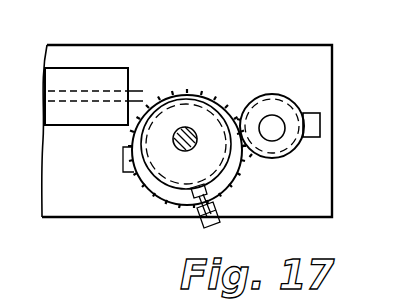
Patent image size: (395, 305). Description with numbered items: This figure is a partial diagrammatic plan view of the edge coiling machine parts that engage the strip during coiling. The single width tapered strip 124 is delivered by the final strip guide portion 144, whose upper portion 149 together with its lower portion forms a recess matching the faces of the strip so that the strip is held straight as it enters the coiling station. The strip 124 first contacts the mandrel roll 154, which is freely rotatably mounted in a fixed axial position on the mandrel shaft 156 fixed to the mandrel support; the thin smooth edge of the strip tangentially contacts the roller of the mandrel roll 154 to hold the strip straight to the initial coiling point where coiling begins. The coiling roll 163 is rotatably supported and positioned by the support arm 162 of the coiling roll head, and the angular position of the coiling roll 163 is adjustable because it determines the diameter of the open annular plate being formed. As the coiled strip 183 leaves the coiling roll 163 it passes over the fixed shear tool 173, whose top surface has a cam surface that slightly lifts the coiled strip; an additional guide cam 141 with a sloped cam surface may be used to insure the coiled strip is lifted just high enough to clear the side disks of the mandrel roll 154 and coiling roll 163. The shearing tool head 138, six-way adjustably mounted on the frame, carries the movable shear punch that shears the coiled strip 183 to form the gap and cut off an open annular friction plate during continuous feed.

The single width strip 124 is at (148, 95).
The shearing tool head 138 is at (29, 298).
The guide cam 141 is at (125, 170).
The strip guide portion 144 is at (110, 68).
The upper portion of strip guide 149 is at (68, 80).
The mandrel roll 154 is at (180, 118).
The mandrel shaft 156 is at (191, 128).
The support arm 162 is at (313, 138).
The coiling roll 163 is at (272, 95).
The shear tool 173 is at (197, 218).
The coiled strip 183 is at (147, 183).